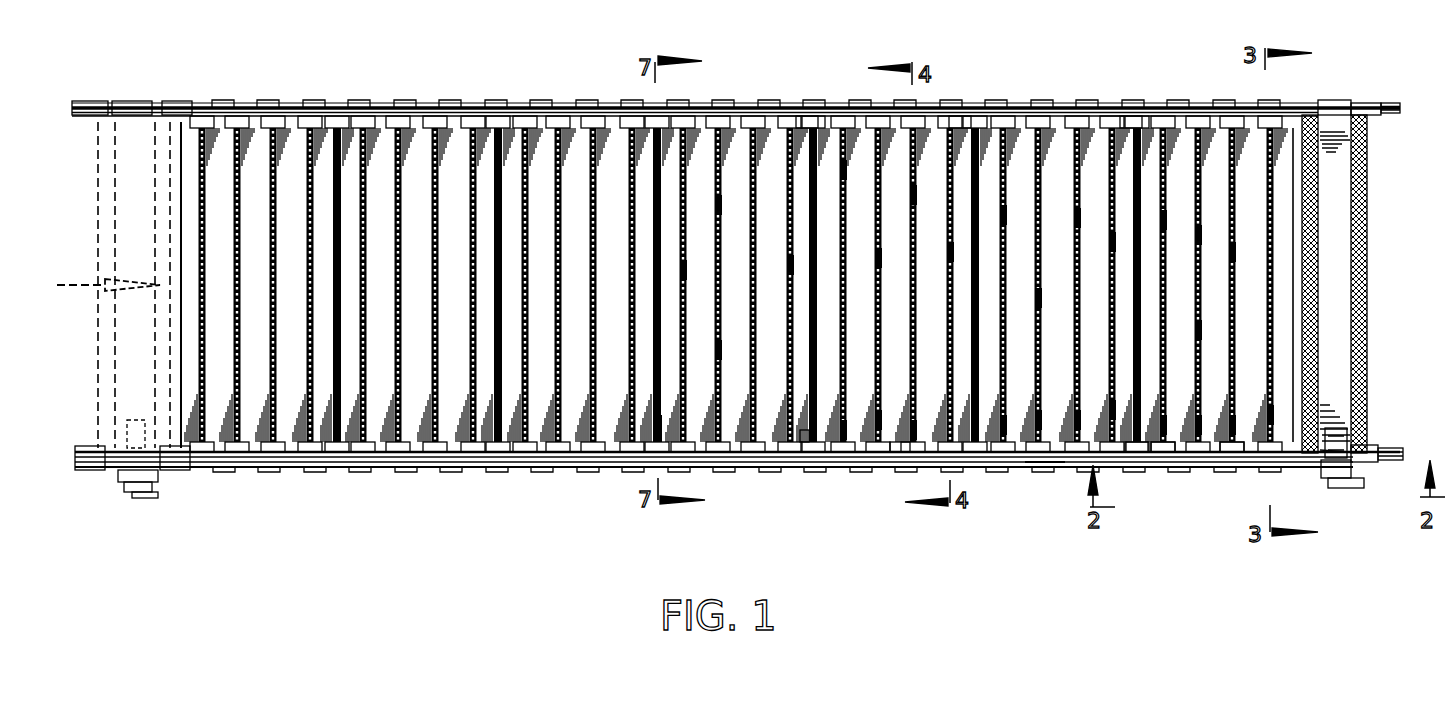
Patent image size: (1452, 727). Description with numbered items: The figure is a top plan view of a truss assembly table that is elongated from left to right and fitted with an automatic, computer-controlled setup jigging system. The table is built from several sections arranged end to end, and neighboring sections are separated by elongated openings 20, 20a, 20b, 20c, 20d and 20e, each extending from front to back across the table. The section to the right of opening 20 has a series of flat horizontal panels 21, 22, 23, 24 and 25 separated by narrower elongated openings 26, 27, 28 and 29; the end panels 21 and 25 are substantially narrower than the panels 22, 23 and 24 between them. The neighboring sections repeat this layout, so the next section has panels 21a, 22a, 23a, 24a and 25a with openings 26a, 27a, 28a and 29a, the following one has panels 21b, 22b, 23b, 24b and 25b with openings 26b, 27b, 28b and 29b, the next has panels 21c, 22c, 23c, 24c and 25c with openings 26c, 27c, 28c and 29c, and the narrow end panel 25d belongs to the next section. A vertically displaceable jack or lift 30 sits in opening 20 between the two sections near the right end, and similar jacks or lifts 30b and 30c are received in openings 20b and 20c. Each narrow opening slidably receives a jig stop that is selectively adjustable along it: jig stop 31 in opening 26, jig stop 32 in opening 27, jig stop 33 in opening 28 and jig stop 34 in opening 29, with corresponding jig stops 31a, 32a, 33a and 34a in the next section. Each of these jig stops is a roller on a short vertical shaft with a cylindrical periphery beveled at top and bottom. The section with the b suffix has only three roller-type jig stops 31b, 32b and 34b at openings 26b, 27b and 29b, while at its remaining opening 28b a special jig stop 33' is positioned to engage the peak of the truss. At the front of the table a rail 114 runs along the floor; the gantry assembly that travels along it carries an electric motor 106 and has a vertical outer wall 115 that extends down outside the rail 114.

The elongated opening 20 is at (1140, 452).
The elongated opening 20a is at (980, 452).
The elongated opening 20b is at (818, 452).
The elongated opening 20c is at (657, 452).
The elongated opening 20d is at (499, 452).
The elongated opening 20e is at (337, 452).
The flat horizontal panel 21 is at (1163, 452).
The flat horizontal panel 21a is at (992, 126).
The flat horizontal panel 21b is at (838, 126).
The flat horizontal panel 21c is at (684, 126).
The flat horizontal panel 22 is at (1180, 126).
The flat horizontal panel 22a is at (1022, 126).
The flat horizontal panel 22b is at (875, 265).
The flat horizontal panel 22c is at (708, 126).
The flat horizontal panel 23 is at (1220, 126).
The flat horizontal panel 23a is at (1062, 126).
The flat horizontal panel 23b is at (882, 445).
The flat horizontal panel 23c is at (741, 126).
The flat horizontal panel 24 is at (1250, 430).
The flat horizontal panel 24a is at (1098, 126).
The flat horizontal panel 24b is at (936, 126).
The flat horizontal panel 24c is at (776, 126).
The flat horizontal panel 25 is at (1280, 126).
The flat horizontal panel 25a is at (1130, 126).
The flat horizontal panel 25b is at (960, 126).
The flat horizontal panel 25c is at (806, 126).
The flat horizontal panel 25d is at (642, 126).
The elongated opening 26 is at (1164, 216).
The elongated opening 26a is at (1004, 212).
The elongated opening 26b is at (845, 168).
The elongated opening 26c is at (684, 264).
The elongated opening 27 is at (1196, 330).
The elongated opening 27a is at (1037, 296).
The elongated opening 27b is at (877, 258).
The elongated opening 27c is at (716, 352).
The elongated opening 28 is at (1199, 230).
The elongated opening 28a is at (1072, 216).
The elongated opening 28b is at (914, 188).
The elongated opening 28c is at (722, 205).
The elongated opening 29 is at (1237, 249).
The elongated opening 29a is at (1108, 240).
The elongated opening 29b is at (949, 252).
The elongated opening 29c is at (790, 262).
The jack or lift 30 is at (1132, 126).
The jack or lift 30b is at (803, 445).
The jack or lift 30c is at (664, 425).
The jig stop 31 is at (1167, 420).
The jig stop 31a is at (1008, 420).
The jig stop 31b is at (845, 432).
The jig stop 32 is at (1203, 420).
The jig stop 32a is at (1046, 416).
The jig stop 32b is at (880, 425).
The jig stop 33 is at (1245, 408).
The jig stop 33a is at (1083, 416).
The special jig stop 33' is at (904, 469).
The jig stop 34 is at (1272, 420).
The jig stop 34a is at (1118, 412).
The jig stop 34b is at (916, 432).
The electric motor 106 is at (125, 420).
The rail 114 is at (1045, 462).
The vertical outer wall 115 is at (112, 470).